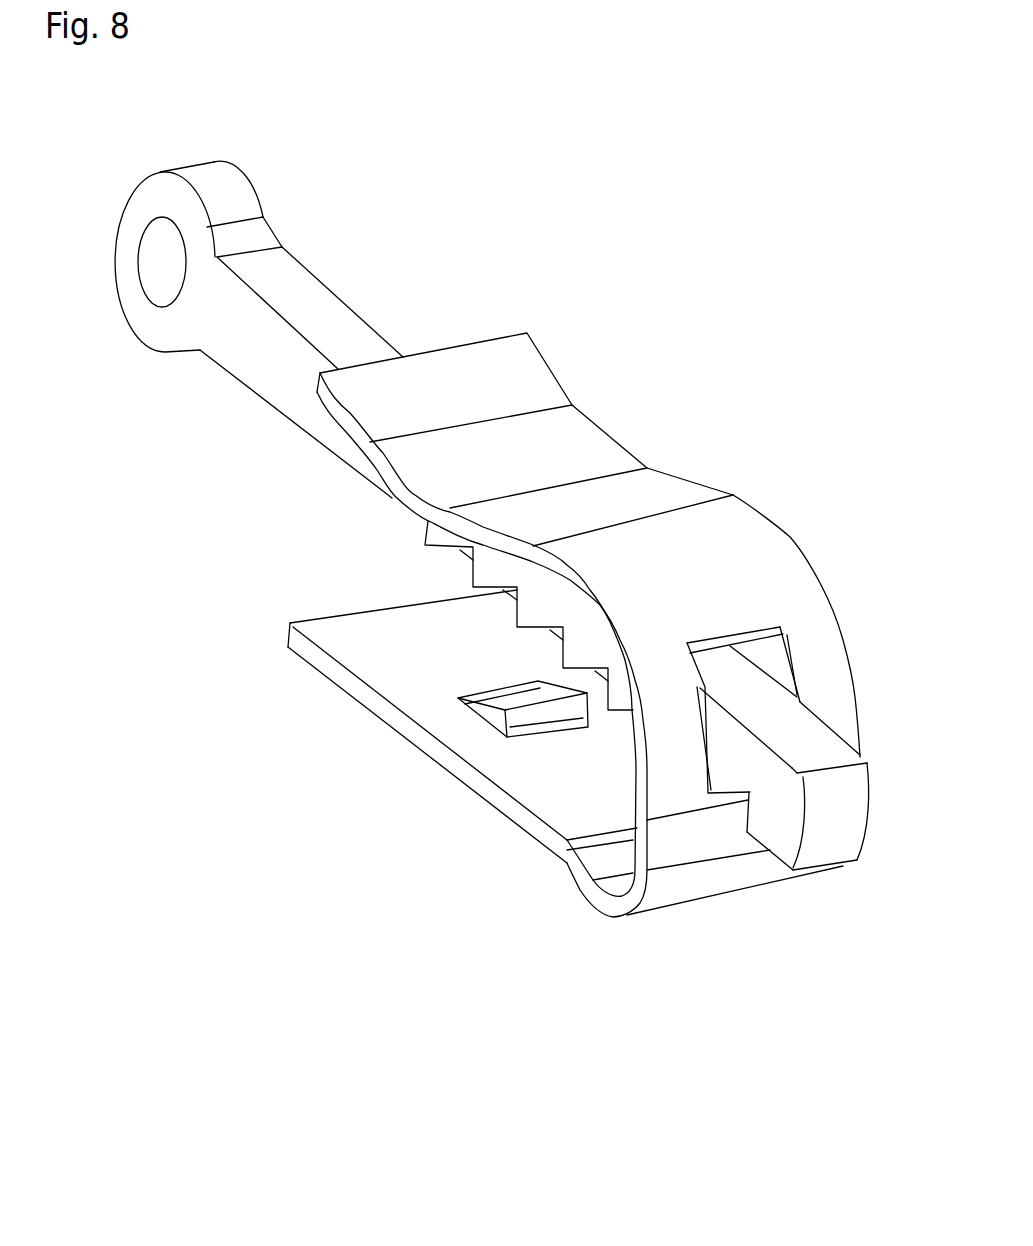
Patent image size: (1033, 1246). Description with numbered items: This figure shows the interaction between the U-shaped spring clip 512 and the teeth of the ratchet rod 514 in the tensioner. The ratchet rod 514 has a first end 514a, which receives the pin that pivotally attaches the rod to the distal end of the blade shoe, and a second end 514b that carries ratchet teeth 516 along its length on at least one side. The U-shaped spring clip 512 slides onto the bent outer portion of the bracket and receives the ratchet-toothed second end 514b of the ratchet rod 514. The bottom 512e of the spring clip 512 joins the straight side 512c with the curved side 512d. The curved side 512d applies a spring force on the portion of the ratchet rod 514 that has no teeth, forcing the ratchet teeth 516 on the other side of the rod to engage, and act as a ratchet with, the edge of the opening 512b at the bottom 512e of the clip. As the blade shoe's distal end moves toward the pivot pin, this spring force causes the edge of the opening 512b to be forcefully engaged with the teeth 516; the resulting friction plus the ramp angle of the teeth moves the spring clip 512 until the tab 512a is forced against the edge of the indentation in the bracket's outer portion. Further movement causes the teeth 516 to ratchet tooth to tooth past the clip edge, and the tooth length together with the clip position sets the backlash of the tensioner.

The U-shaped spring clip 512 is at (525, 862).
The tab 512a is at (520, 712).
The opening 512b is at (763, 653).
The straight side 512c is at (400, 683).
The curved side 512d is at (588, 463).
The bottom 512e is at (690, 852).
The ratchet rod 514 is at (335, 297).
The first end 514a is at (210, 203).
The second end 514b is at (780, 783).
The ratchet teeth 516 is at (490, 583).